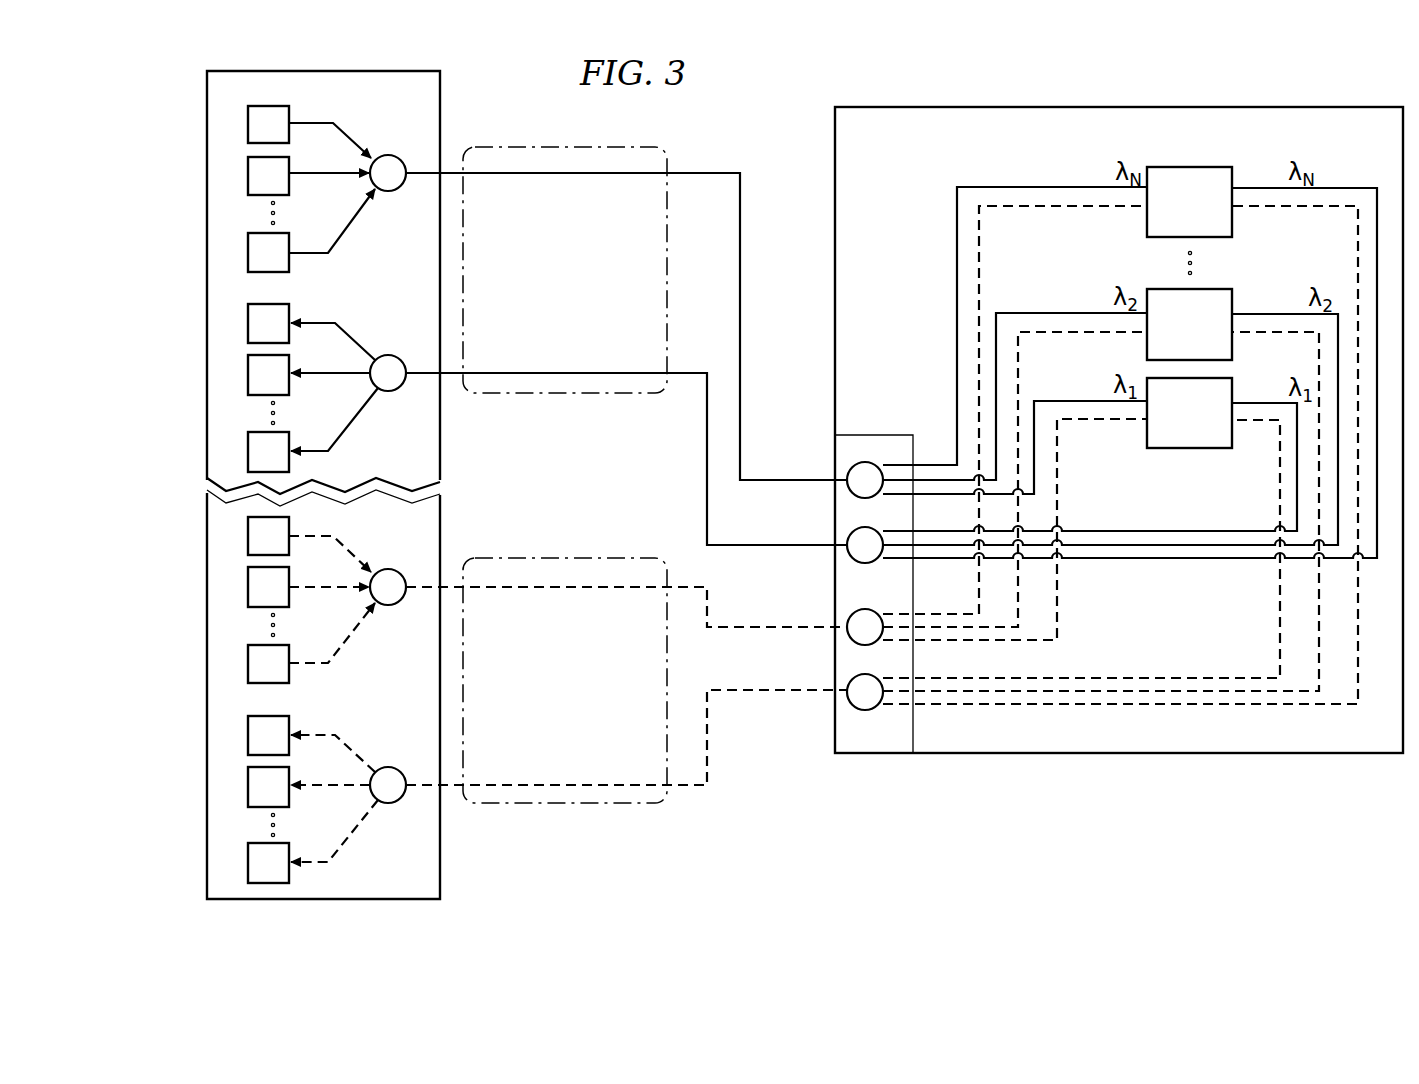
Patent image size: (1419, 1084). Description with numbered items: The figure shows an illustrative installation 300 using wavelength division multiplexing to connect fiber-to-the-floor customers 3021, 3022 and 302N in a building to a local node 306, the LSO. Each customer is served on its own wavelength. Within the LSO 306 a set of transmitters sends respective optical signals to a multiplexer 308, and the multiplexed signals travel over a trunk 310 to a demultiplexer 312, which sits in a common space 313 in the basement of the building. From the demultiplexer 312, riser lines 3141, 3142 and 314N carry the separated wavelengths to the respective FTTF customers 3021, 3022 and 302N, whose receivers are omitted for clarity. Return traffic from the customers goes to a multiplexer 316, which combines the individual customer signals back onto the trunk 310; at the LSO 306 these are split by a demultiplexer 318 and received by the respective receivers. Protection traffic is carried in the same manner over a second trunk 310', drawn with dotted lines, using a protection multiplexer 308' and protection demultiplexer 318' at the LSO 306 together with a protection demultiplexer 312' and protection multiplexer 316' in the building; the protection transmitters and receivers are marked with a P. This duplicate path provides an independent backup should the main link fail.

The installation 300 is at (788, 148).
The local node (LSO) 306 is at (207, 112).
The multiplexer 308 is at (568, 293).
The demultiplexer 318 is at (569, 425).
The protection multiplexer 308' is at (568, 590).
The protection demultiplexer 318' is at (569, 776).
The trunk 310 is at (565, 241).
The protection trunk 310' is at (565, 654).
The demultiplexer 312 is at (828, 470).
The multiplexer 316 is at (828, 535).
The protection demultiplexer 312' is at (960, 425).
The protection multiplexer 316' is at (1065, 458).
The common space 313 is at (876, 435).
The riser line 314N is at (1058, 187).
The riser line 3142 is at (1066, 313).
The riser line 3141 is at (1068, 401).
The FTTF customer 302N is at (1212, 167).
The FTTF customer 3022 is at (1216, 289).
The FTTF customer 3021 is at (1234, 378).